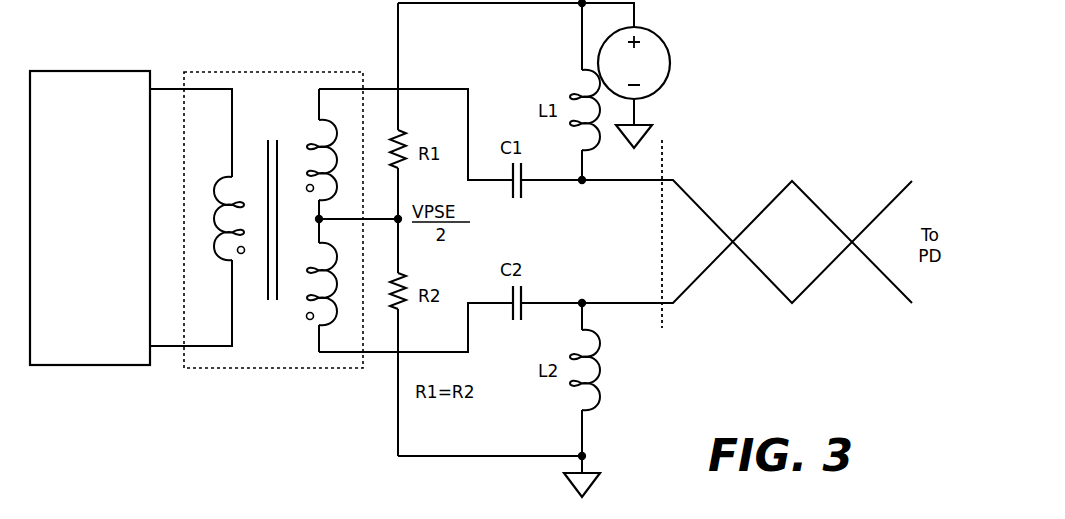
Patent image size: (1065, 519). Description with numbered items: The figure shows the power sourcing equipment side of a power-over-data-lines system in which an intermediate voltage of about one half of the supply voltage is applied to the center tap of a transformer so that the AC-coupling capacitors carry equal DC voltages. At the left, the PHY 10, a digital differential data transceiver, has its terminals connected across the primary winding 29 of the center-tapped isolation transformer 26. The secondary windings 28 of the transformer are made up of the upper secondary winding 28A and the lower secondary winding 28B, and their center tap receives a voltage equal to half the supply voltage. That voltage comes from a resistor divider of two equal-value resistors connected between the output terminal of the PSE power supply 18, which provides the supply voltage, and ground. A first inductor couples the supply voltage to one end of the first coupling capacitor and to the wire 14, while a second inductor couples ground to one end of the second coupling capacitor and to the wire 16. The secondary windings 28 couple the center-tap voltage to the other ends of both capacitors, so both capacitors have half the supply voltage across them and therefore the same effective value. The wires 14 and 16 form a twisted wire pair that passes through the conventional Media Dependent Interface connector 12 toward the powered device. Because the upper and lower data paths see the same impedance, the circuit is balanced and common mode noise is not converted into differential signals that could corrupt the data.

The PHY 10 is at (90, 71).
The Media Dependent Interface (MDI) connector 12 is at (664, 165).
The wire 14 is at (702, 208).
The wire 16 is at (700, 278).
The PSE power supply 18 is at (670, 62).
The isolation transformer 26 is at (270, 72).
The secondary windings 28 is at (348, 193).
The upper secondary winding 28A is at (341, 160).
The lower secondary winding 28B is at (341, 284).
The primary winding 29 is at (218, 105).